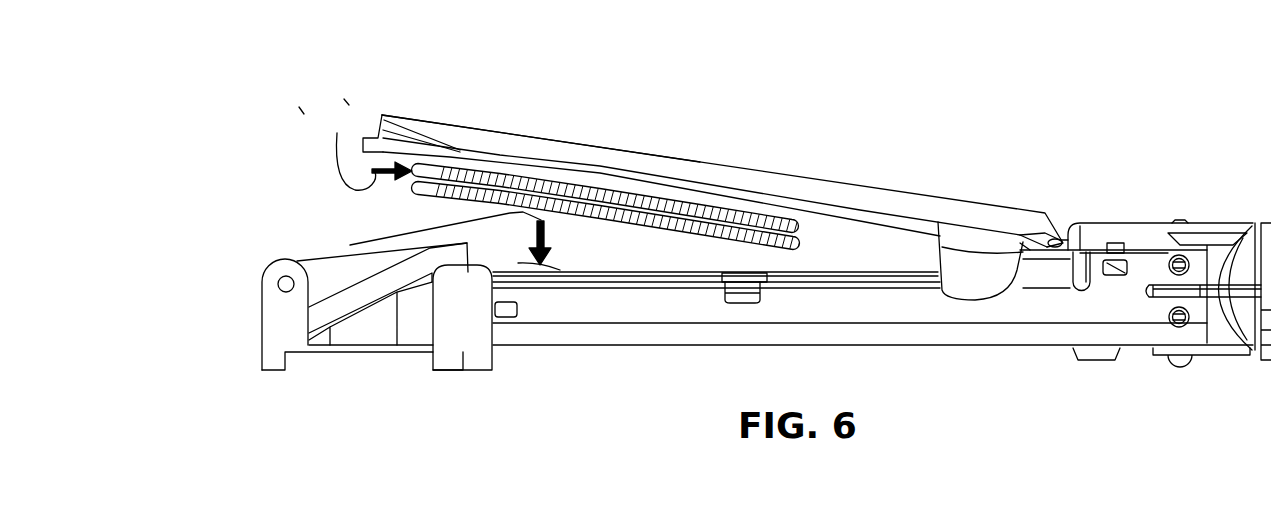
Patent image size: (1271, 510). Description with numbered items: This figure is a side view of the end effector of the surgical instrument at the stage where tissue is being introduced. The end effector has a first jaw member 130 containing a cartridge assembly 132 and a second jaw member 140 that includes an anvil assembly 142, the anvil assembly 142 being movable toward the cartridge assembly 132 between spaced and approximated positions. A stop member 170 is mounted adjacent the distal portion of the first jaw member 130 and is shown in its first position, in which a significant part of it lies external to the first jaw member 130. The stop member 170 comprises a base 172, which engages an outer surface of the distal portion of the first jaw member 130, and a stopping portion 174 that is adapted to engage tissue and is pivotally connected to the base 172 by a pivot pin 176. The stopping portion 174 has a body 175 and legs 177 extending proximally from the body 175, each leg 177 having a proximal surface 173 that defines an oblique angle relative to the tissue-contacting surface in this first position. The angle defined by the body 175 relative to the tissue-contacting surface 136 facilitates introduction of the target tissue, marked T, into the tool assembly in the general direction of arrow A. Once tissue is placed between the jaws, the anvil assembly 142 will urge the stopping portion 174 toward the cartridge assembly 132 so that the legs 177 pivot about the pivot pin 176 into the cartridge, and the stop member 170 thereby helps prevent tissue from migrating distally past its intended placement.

The first jaw member 130 is at (656, 374).
The cartridge assembly 132 is at (837, 303).
The tissue-contacting surface 136 is at (617, 277).
The second jaw member 140 is at (733, 100).
The anvil assembly 142 is at (540, 142).
The stop member 170 is at (346, 384).
The base 172 is at (480, 363).
The proximal surface 173 is at (560, 240).
The stopping portion 174 is at (444, 227).
The body 175 is at (347, 258).
The pivot pin 176 is at (278, 284).
The leg 177 is at (553, 213).